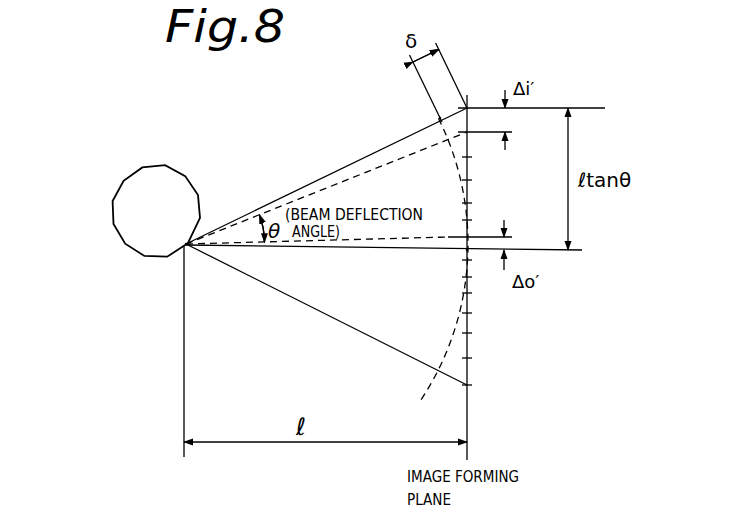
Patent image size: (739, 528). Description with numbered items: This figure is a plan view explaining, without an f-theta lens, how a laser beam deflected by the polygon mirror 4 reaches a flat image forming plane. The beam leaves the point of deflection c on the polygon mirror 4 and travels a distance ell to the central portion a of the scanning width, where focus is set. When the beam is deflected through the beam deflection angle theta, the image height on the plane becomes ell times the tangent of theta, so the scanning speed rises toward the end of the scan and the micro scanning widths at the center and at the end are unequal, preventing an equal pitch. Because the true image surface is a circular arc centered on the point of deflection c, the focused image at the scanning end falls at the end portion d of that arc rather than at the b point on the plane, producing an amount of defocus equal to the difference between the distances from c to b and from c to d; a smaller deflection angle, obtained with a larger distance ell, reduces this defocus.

The polygon mirror 4 is at (146, 173).
The central portion of the scanning width a is at (468, 250).
The b point on the photoconductive drum b is at (470, 103).
The point of deflection of the polygon mirror c is at (185, 250).
The end portion of the scanning width d is at (440, 119).